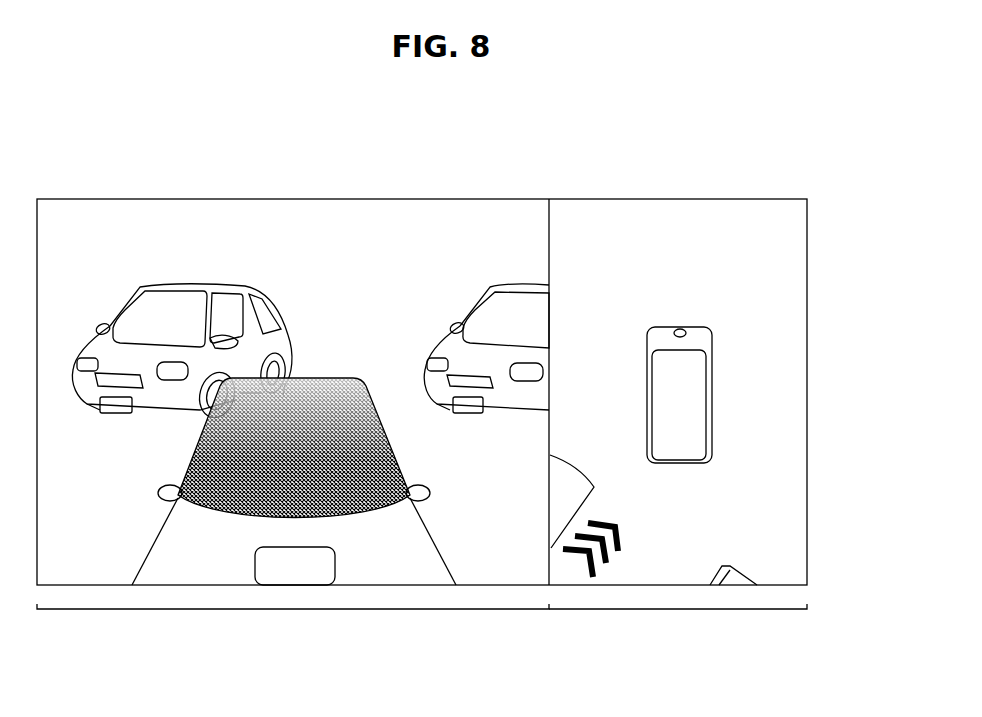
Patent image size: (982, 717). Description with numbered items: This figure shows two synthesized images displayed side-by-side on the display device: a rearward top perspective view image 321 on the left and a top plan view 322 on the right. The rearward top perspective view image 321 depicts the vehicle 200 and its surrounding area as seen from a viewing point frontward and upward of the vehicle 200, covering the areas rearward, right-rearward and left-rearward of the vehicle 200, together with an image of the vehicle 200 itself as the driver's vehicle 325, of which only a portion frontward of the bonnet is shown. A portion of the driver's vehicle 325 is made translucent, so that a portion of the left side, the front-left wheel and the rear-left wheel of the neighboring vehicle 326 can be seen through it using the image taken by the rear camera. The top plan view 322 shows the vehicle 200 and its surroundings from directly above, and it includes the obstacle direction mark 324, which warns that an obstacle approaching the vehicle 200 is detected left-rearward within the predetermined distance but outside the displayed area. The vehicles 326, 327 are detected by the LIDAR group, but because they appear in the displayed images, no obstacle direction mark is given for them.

The rearward top perspective view image 321 is at (293, 609).
The top plan view 322 is at (678, 609).
The obstacle direction mark 324 is at (617, 531).
The driver's vehicle 325 is at (453, 360).
The vehicle 200 is at (332, 407).
The vehicle 326 is at (160, 310).
The vehicle 327 is at (505, 310).